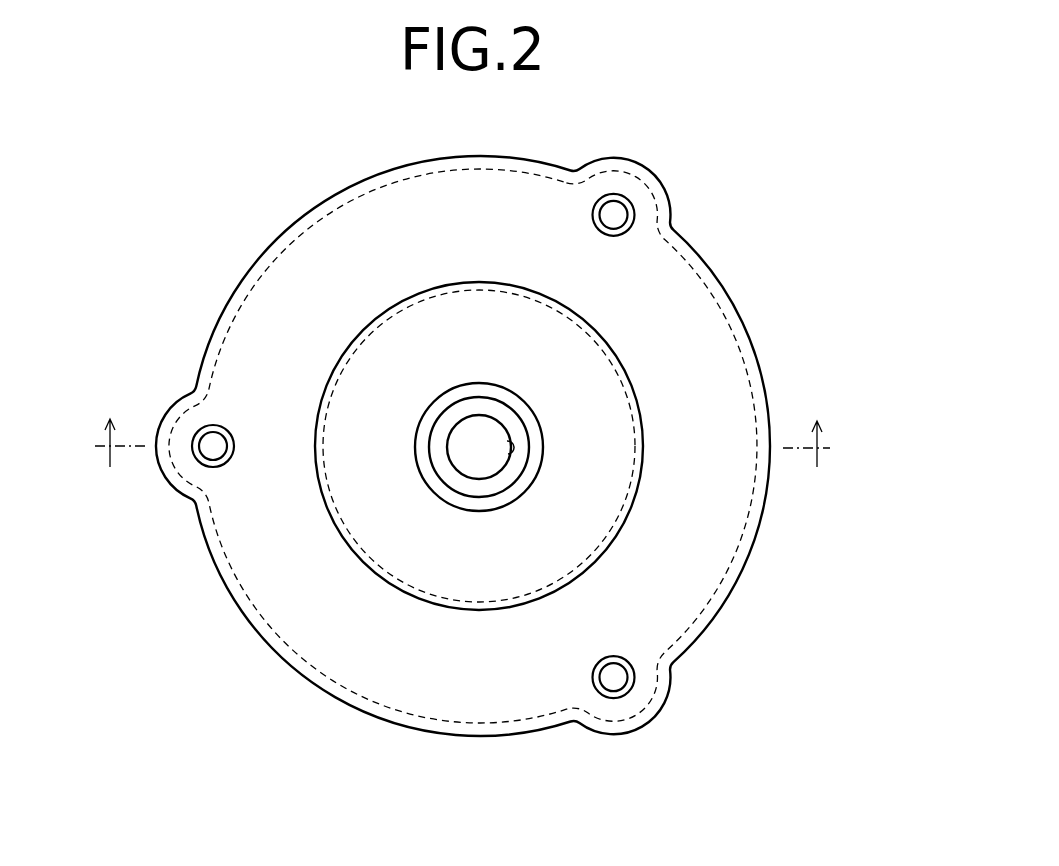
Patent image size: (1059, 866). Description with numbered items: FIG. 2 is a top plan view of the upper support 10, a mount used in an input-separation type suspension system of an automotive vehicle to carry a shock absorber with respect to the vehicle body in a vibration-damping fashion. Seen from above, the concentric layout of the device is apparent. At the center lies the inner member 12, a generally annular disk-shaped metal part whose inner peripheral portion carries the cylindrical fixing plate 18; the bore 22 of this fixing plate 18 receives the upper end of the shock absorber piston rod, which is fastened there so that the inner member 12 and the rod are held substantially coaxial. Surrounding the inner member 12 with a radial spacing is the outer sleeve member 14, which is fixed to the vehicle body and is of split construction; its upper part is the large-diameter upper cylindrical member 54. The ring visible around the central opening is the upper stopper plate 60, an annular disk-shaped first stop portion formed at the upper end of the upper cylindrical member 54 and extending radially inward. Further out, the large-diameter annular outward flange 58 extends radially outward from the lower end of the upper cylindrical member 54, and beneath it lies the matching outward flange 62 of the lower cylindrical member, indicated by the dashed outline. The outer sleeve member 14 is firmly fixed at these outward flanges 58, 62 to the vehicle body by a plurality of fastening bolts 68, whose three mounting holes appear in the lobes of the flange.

The upper support 10 is at (760, 218).
The inner member 12 is at (447, 393).
The outer sleeve member 14 is at (462, 450).
The cylindrical fixing plate 18 is at (508, 477).
The bore 22 is at (508, 456).
The upper cylindrical member 54 is at (210, 318).
The outward flange 58 is at (270, 575).
The upper stopper plate 60 is at (370, 538).
The outward flange 62 is at (327, 683).
The fastening bolts 68 is at (209, 440).